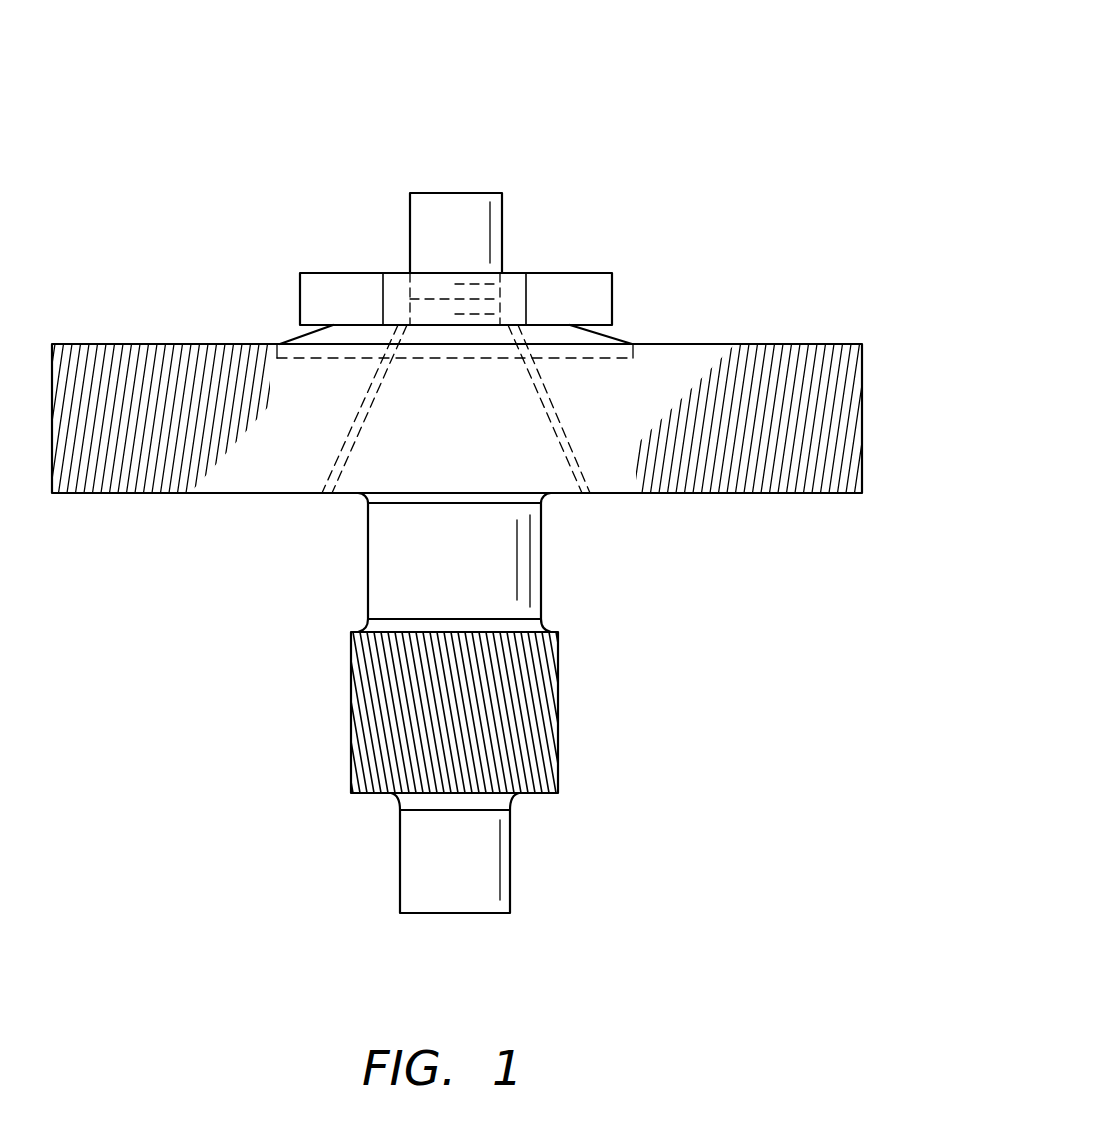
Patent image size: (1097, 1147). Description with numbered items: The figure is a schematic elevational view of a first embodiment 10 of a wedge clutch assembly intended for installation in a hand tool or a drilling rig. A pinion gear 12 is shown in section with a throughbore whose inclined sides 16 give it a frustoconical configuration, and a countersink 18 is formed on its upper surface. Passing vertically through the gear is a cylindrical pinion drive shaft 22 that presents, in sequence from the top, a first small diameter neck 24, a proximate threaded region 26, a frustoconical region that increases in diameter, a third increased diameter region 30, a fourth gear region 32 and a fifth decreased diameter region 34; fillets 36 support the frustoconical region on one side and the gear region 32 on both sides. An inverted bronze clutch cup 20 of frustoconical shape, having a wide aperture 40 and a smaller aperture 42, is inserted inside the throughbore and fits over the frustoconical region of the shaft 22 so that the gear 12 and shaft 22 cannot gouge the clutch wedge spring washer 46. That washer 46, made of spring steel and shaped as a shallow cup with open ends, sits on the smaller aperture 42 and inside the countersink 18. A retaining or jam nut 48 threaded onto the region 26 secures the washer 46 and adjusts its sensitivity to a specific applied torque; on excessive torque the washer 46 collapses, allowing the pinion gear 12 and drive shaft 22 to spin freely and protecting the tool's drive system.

The wedge clutch assembly 10 is at (647, 77).
The pinion gear 12 is at (247, 482).
The inclined sides 16 is at (373, 398).
The countersink 18 is at (349, 358).
The bronze clutch cup 20 is at (378, 466).
The pinion drive shaft 22 is at (310, 617).
The first small diameter neck 24 is at (427, 193).
The threaded region 26 is at (427, 300).
The third increased diameter region 30 is at (466, 559).
The fourth gear region 32 is at (558, 758).
The fifth decreased diameter region 34 is at (476, 874).
The fillets 36 is at (545, 497).
The wide aperture 40 is at (508, 492).
The smaller aperture 42 is at (477, 352).
The clutch wedge spring washer 46 is at (617, 338).
The retaining nut 48 is at (565, 273).